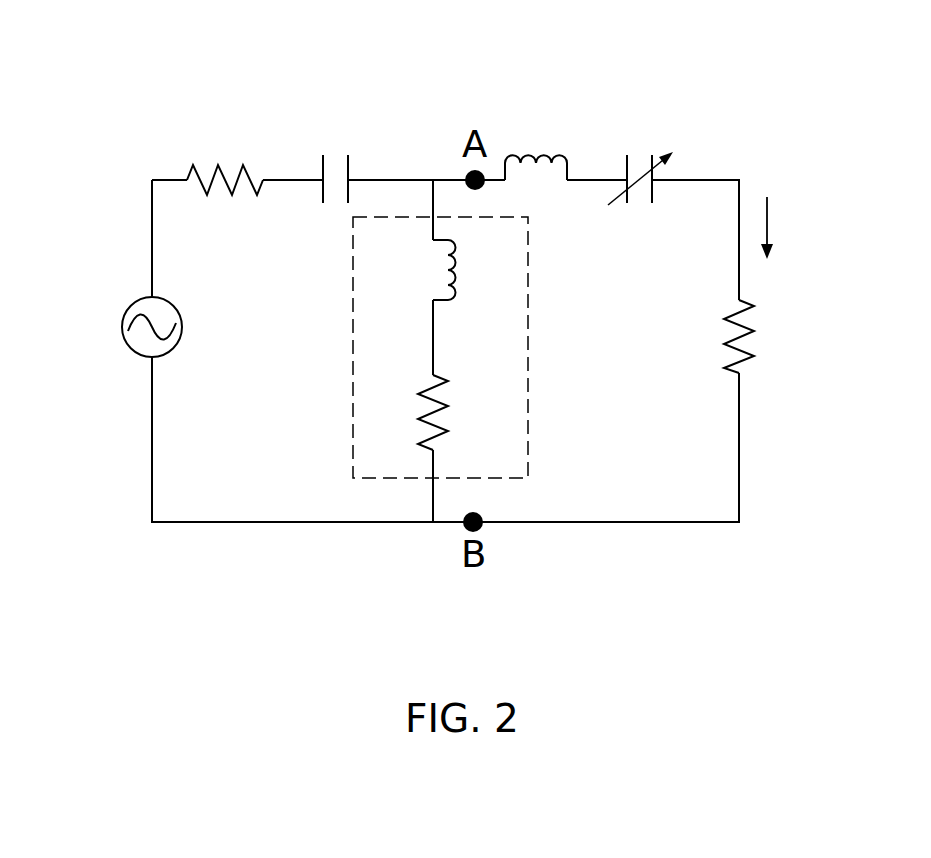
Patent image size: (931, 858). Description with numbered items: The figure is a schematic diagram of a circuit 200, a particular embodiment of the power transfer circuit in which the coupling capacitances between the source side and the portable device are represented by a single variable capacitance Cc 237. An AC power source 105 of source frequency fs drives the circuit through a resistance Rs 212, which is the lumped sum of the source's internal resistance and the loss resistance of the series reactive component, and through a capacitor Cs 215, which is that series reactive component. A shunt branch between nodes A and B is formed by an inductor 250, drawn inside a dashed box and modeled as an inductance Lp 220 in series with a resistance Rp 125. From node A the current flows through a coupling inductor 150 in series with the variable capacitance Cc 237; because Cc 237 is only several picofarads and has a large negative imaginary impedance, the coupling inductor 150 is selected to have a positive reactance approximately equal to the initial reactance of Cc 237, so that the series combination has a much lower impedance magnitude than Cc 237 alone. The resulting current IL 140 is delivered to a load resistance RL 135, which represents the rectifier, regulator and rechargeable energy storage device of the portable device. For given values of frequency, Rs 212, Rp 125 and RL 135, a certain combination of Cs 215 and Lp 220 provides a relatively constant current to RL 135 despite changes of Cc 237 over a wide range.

The circuit 200 is at (406, 290).
The resistance Rs 212 is at (252, 148).
The capacitor Cs 215 is at (363, 160).
The inductor Lcc 150 is at (503, 147).
The variable capacitance Cc 237 is at (617, 155).
The current IL 140 is at (810, 213).
The load resistance RL 135 is at (722, 300).
The AC power source 105 is at (120, 290).
The inductor 250 is at (540, 297).
The inductance Lp 220 is at (437, 275).
The resistance Rp 125 is at (415, 405).